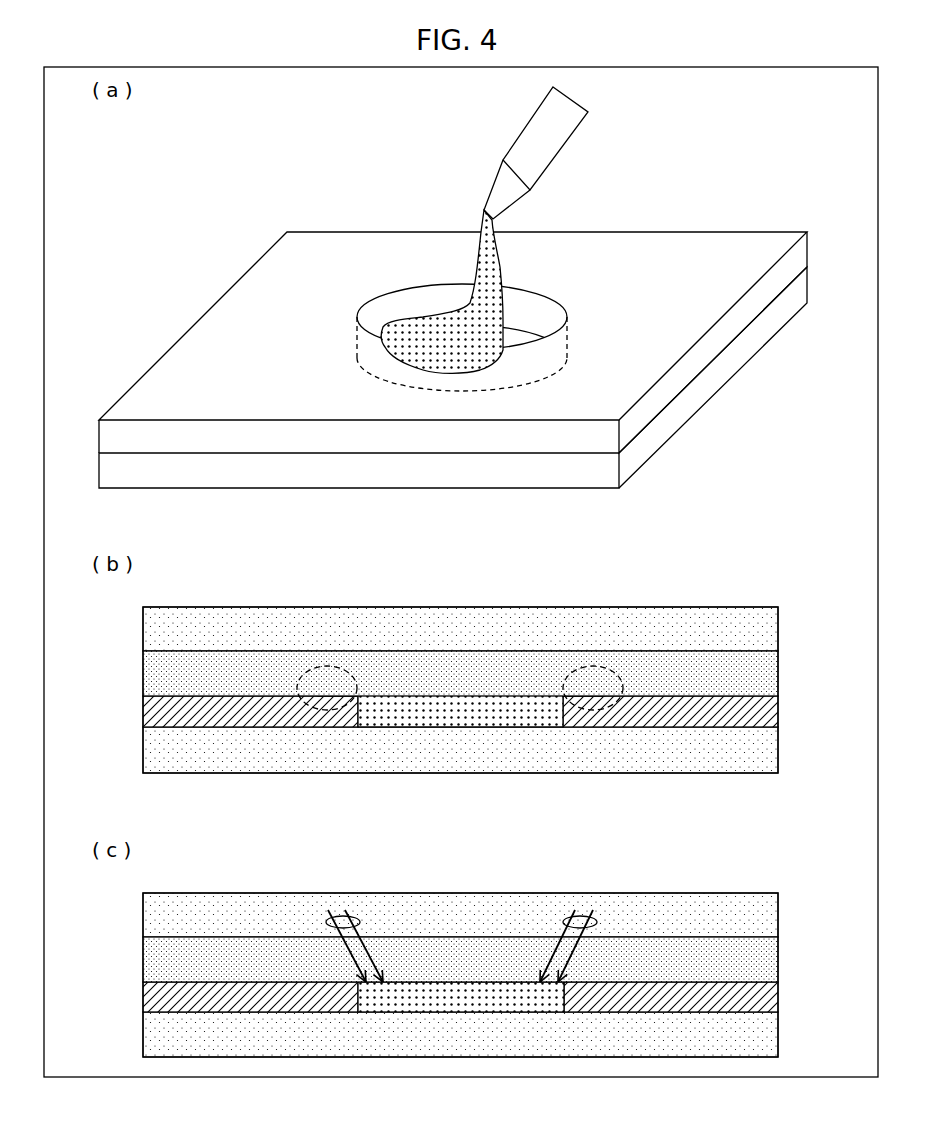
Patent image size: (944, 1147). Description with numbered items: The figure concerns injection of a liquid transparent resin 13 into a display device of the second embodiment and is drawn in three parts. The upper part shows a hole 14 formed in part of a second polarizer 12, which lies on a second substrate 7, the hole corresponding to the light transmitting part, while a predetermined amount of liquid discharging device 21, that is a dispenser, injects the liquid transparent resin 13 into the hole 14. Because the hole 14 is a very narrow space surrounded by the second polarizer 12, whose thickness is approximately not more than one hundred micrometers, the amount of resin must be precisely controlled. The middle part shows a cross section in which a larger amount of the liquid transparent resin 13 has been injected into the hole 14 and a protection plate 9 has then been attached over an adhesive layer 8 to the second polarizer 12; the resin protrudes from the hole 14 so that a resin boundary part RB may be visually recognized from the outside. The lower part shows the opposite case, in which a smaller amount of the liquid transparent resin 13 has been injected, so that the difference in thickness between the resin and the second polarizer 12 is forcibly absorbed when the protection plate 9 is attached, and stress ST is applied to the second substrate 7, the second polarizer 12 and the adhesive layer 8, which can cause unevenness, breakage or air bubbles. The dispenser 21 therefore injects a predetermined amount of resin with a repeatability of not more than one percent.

The second substrate 7 is at (806, 292).
The adhesive layer 8 is at (766, 680).
The protection plate 9 is at (766, 635).
The second polarizer 12 is at (806, 257).
The liquid transparent resin 13 is at (483, 272).
The hole 14 is at (414, 298).
The predetermined amount of liquid discharging device 21 is at (532, 134).
The resin boundary part RB is at (327, 666).
The stress ST is at (344, 917).